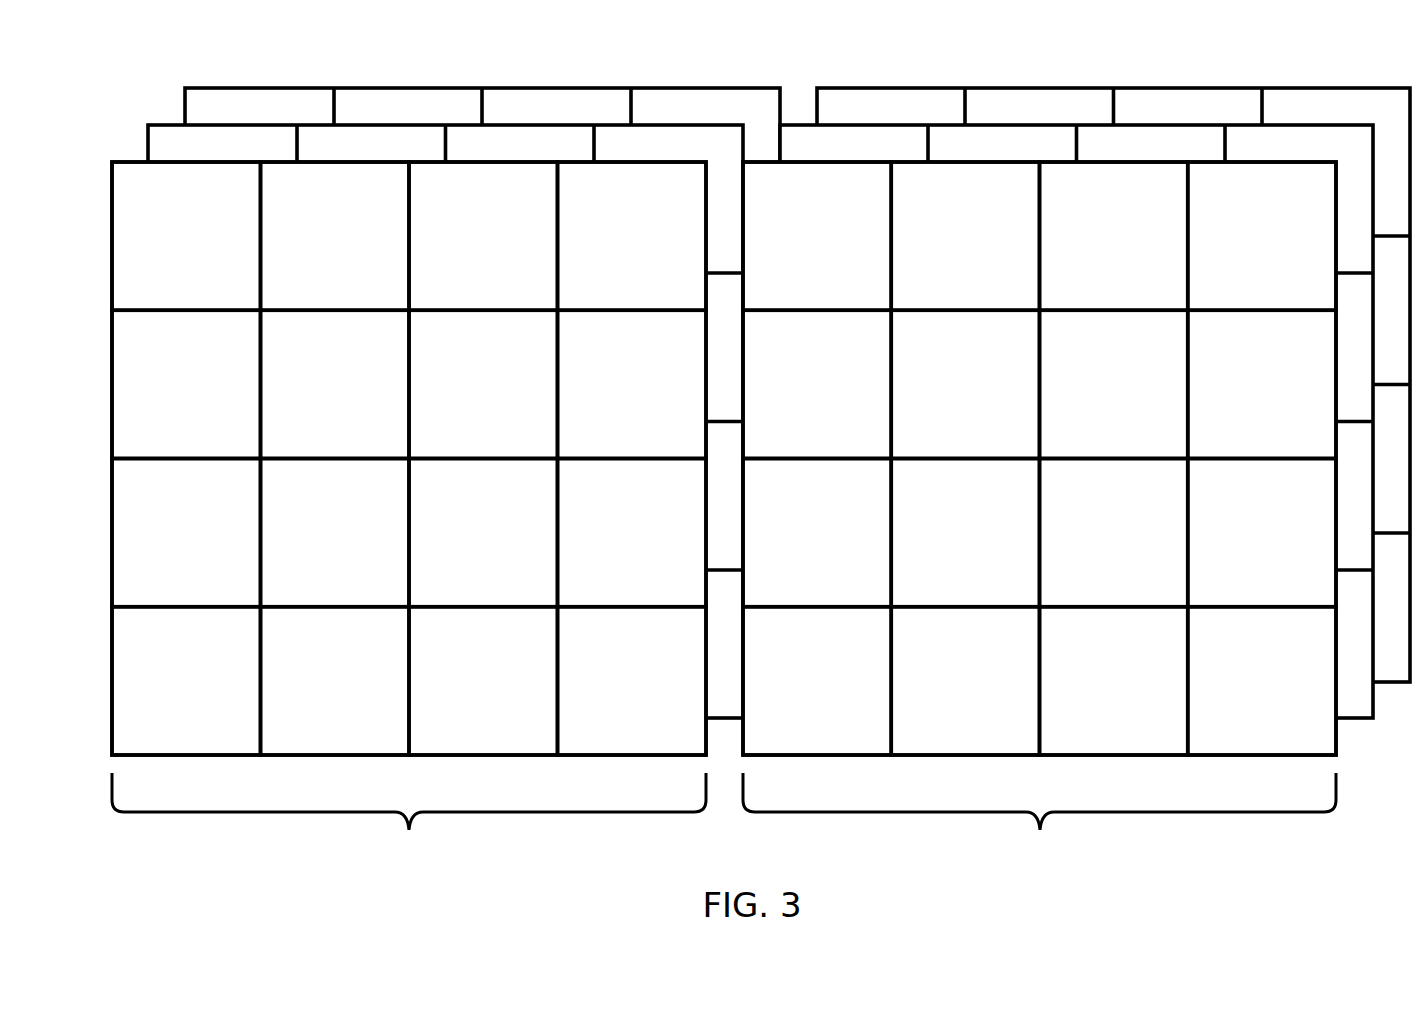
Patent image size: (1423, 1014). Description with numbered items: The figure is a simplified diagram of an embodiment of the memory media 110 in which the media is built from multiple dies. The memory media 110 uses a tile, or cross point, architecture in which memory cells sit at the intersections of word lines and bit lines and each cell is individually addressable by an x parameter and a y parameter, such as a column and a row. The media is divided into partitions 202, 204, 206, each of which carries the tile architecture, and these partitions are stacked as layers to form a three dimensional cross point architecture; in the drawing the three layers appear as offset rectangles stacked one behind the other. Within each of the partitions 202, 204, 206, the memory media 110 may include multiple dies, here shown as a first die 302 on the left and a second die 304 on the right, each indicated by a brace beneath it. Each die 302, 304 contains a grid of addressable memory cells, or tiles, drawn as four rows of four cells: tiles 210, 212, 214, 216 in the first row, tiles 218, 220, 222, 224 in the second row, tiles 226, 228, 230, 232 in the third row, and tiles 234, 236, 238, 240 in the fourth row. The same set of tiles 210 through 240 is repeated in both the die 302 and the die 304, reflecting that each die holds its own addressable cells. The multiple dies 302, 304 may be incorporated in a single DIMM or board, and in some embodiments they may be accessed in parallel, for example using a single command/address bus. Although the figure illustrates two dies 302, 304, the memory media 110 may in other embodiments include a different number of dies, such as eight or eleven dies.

The memory media 110 is at (66, 78).
The partition 202 is at (120, 162).
The partition 204 is at (162, 125).
The partition 206 is at (204, 88).
The tile 210 is at (166, 261).
The tile 212 is at (315, 261).
The tile 214 is at (463, 261).
The tile 216 is at (612, 261).
The tile 218 is at (166, 409).
The tile 220 is at (315, 409).
The tile 222 is at (463, 409).
The tile 224 is at (612, 409).
The tile 226 is at (166, 557).
The tile 228 is at (315, 557).
The tile 230 is at (463, 557).
The tile 232 is at (612, 557).
The tile 234 is at (166, 706).
The tile 236 is at (315, 706).
The tile 238 is at (463, 706).
The tile 240 is at (612, 706).
The die 302 is at (450, 859).
The die 304 is at (1080, 859).